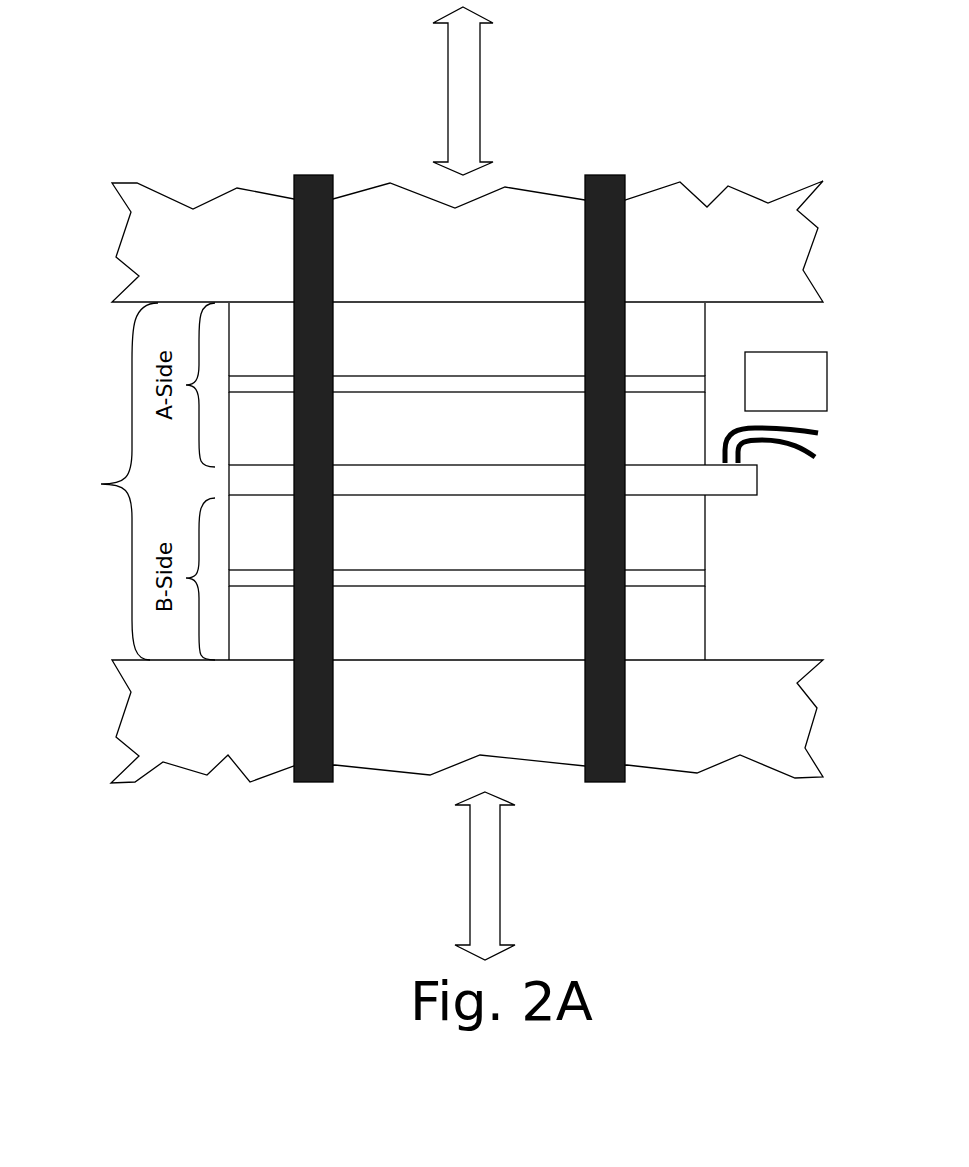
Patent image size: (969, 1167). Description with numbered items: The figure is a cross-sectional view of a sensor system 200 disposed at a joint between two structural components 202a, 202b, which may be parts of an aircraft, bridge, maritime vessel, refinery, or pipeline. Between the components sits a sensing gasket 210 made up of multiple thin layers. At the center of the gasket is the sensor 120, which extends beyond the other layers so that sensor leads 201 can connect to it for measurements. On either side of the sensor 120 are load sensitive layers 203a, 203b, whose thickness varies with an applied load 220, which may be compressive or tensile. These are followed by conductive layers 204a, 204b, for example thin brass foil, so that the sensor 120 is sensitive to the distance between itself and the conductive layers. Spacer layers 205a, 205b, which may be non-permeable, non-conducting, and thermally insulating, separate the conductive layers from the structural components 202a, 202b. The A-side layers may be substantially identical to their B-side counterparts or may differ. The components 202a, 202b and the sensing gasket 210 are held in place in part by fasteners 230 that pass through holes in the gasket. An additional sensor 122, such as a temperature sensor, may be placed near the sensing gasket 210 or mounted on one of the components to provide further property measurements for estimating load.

The sensor system 200 is at (157, 86).
The applied load 220 is at (422, 55).
The fasteners 230 is at (340, 184).
The component 202a is at (700, 236).
The component 202b is at (703, 698).
The spacer layer 205a is at (700, 333).
The spacer layer 205b is at (700, 617).
The conductive layer 204a is at (708, 385).
The conductive layer 204b is at (708, 578).
The load sensitive layer 203a is at (700, 422).
The load sensitive layer 203b is at (700, 529).
The sensor 120 is at (699, 493).
The additional sensor 122 is at (786, 381).
The sensor leads 201 is at (764, 449).
The sensing gasket 210 is at (108, 481).